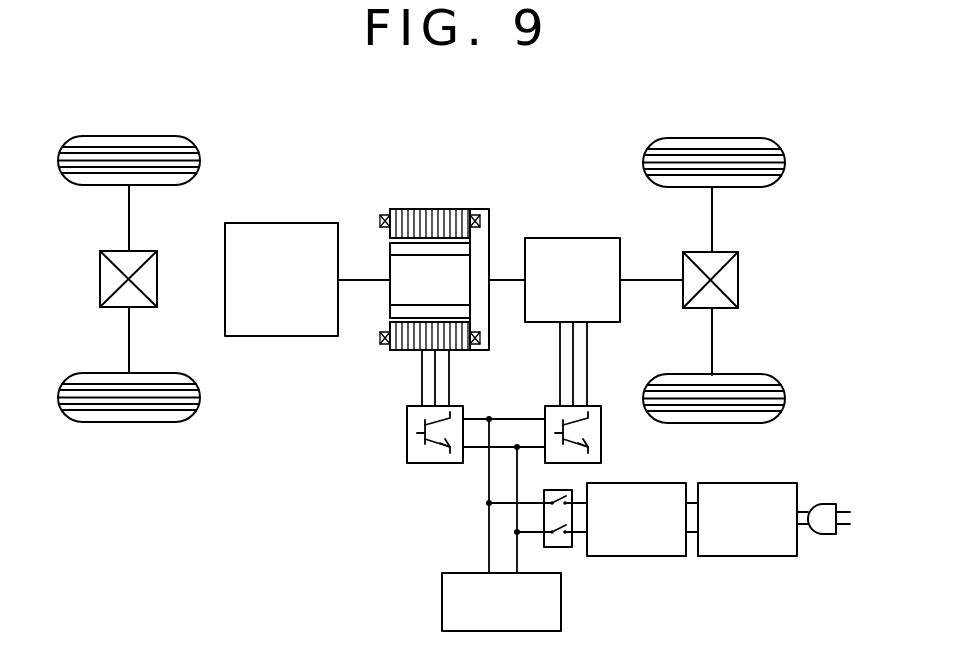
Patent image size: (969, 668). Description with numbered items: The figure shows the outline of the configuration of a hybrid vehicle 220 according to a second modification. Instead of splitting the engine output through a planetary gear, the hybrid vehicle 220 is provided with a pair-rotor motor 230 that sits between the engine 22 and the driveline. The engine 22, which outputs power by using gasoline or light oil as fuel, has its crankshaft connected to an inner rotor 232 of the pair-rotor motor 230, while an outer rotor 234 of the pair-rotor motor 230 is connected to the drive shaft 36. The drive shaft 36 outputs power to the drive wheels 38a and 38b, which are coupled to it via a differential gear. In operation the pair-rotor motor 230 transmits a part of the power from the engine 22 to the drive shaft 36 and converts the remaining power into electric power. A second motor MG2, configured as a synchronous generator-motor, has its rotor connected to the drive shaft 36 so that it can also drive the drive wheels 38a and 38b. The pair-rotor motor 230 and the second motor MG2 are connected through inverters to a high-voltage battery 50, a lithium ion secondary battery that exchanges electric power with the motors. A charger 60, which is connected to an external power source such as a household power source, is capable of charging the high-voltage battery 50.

The hybrid vehicle 220 is at (537, 92).
The engine 22 is at (283, 222).
The pair-rotor motor 230 is at (420, 229).
The inner rotor 232 is at (390, 265).
The outer rotor 234 is at (437, 208).
The second motor MG2 is at (573, 237).
The drive shaft 36 is at (645, 278).
The drive wheel 38a is at (713, 137).
The drive wheel 38b is at (712, 423).
The charger 60 is at (651, 468).
The high-voltage battery 50 is at (561, 602).